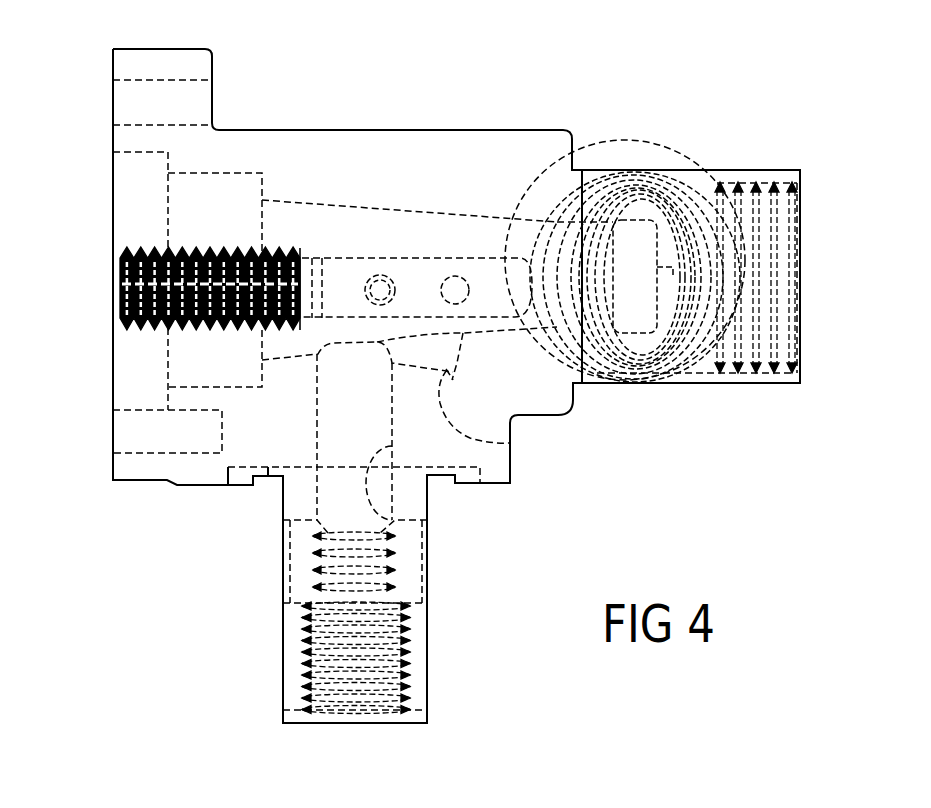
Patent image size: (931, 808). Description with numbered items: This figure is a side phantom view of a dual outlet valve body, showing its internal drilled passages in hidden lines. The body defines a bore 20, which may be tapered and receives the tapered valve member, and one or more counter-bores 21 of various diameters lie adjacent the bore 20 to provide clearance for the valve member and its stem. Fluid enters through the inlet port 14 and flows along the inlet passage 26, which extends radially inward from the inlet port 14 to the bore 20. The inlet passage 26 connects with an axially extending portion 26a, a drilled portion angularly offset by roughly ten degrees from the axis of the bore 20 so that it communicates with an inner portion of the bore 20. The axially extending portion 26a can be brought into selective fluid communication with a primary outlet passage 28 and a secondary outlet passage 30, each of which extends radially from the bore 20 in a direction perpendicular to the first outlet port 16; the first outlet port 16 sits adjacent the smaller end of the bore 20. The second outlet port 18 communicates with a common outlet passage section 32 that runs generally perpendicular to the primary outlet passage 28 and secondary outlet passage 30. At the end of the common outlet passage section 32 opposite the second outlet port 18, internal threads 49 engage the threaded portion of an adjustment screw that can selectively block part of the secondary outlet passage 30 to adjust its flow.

The inlet port 14 is at (384, 713).
The first outlet port 16 is at (800, 254).
The second outlet port 18 is at (600, 383).
The bore 20 is at (393, 220).
The counter-bore 21 is at (147, 152).
The inlet passage 26 is at (395, 518).
The axially extending portion 26a is at (510, 443).
The primary outlet passage 28 is at (441, 276).
The secondary outlet passage 30 is at (362, 275).
The common outlet passage section 32 is at (573, 153).
The internal threads 49 is at (120, 299).